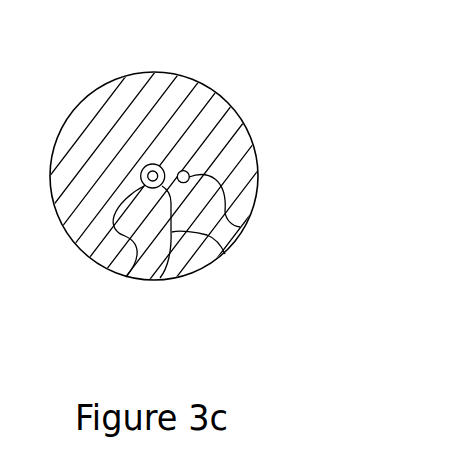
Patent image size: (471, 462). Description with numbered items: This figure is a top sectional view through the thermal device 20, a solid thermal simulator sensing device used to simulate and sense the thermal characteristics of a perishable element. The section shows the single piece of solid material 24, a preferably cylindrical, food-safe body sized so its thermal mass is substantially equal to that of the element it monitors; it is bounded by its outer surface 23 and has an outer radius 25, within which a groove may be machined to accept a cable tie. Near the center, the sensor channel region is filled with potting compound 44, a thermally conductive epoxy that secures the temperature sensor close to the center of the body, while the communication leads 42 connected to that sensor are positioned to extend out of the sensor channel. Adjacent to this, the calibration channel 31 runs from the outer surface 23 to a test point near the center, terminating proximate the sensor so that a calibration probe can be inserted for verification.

The thermal device 20 is at (61, 100).
The outer surface 23 is at (74, 220).
The single piece of solid material 24 is at (232, 156).
The outer radius 25 is at (225, 254).
The calibration channel 31 is at (240, 227).
The communication leads 42 is at (185, 170).
The potting compound 44 is at (135, 258).